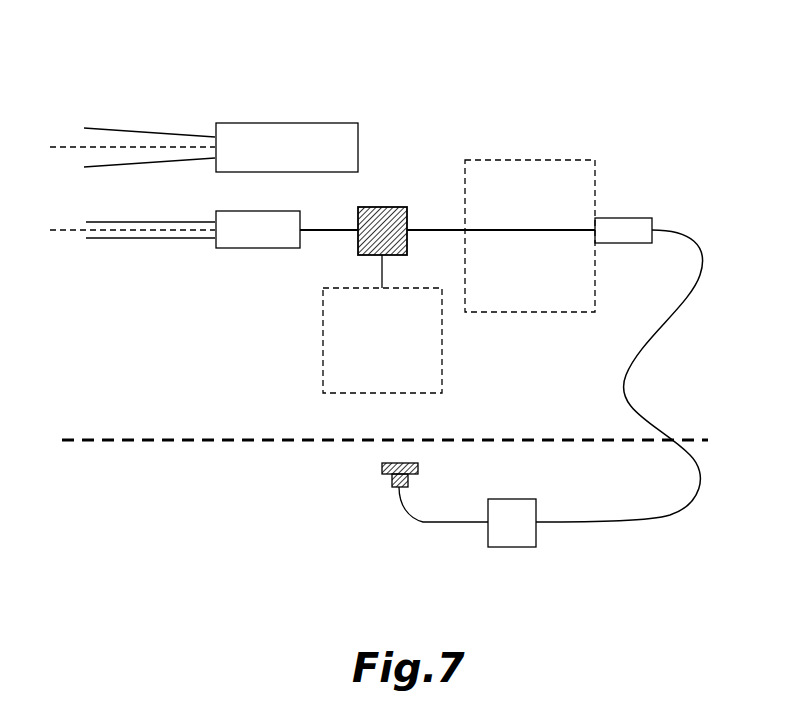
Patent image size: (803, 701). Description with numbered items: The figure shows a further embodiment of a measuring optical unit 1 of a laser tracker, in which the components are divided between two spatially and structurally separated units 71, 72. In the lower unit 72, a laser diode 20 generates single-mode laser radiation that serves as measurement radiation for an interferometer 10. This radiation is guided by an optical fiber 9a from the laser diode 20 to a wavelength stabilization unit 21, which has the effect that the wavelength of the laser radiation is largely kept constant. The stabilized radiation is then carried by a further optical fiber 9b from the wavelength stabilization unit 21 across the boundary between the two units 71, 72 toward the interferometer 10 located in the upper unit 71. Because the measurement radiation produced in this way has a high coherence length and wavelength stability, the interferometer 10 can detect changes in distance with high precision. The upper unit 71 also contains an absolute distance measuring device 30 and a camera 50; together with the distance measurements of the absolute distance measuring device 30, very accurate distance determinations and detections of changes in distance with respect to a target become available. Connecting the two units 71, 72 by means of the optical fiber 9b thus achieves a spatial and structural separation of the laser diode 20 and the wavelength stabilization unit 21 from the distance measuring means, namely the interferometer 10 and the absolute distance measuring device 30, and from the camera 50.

The measuring optical unit 1 is at (196, 73).
The camera 50 is at (296, 128).
The interferometer 10 is at (541, 216).
The absolute distance measuring device 30 is at (348, 340).
The optical fiber 9b is at (633, 376).
The unit 71 is at (133, 407).
The unit 72 is at (133, 500).
The laser diode 20 is at (359, 486).
The optical fiber 9a is at (413, 522).
The wavelength stabilization unit 21 is at (533, 537).